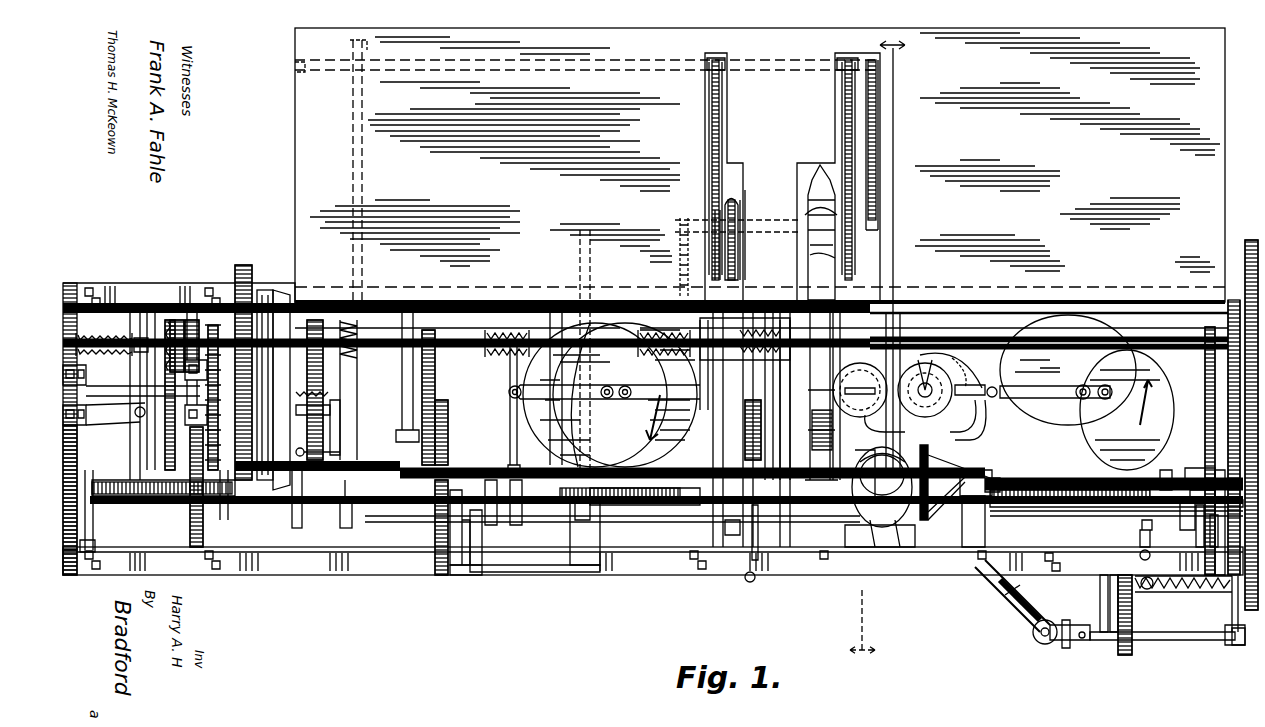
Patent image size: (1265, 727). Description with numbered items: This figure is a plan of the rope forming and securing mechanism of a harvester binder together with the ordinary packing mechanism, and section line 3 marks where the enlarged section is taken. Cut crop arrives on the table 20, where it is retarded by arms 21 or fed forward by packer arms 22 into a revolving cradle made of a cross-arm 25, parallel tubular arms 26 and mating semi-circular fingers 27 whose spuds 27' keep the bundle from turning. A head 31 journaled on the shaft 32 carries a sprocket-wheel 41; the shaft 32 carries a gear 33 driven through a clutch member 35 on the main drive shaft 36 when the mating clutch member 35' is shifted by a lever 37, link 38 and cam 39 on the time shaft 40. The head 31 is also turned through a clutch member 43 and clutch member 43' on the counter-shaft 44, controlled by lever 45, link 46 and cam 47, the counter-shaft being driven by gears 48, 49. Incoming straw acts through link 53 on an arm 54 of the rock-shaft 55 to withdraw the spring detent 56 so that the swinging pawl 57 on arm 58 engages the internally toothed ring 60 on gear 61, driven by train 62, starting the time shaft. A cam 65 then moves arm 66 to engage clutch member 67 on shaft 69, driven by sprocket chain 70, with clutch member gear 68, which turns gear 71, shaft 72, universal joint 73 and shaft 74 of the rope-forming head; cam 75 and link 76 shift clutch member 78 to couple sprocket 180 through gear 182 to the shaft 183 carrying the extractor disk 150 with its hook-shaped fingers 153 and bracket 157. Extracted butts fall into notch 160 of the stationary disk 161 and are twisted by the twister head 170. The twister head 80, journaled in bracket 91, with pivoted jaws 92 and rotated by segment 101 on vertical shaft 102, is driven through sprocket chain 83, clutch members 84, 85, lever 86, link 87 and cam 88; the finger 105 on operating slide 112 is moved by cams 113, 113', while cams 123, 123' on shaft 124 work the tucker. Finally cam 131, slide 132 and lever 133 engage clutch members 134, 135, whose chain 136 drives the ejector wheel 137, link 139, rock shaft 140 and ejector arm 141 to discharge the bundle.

The section line 3— 3 is at (877, 349).
The table 20 is at (760, 165).
The arms 21 is at (820, 122).
The packer arms 22 is at (745, 205).
The cross-arm 25 is at (270, 288).
The tubular arms 26 is at (385, 475).
The semi-circular fingers 27 is at (865, 322).
The spuds 27' is at (801, 244).
The head 31 is at (243, 265).
The shaft 32 is at (150, 430).
The gear 33 is at (168, 440).
The clutch member 35 is at (198, 311).
The clutch member 35' is at (173, 311).
The main drive shaft 36 is at (1175, 335).
The lever 37 is at (117, 400).
The link 38 is at (88, 456).
The cam 39 is at (93, 520).
The time shaft 40 is at (1072, 508).
The sprocket-wheel 41 is at (178, 508).
The clutch member 43 is at (206, 428).
The clutch member 43' is at (221, 430).
The counter-shaft 44 is at (325, 400).
The lever 45 is at (304, 450).
The link 46 is at (348, 528).
The cam 47 is at (296, 528).
The gear 48 is at (340, 425).
The gear 49 is at (300, 370).
The link 53 is at (755, 570).
The arm 54 is at (755, 580).
The rock-shaft 55 is at (555, 572).
The spring detent 56 is at (730, 418).
The swinging pawl 57 is at (476, 565).
The arm 58 is at (492, 525).
The internally toothed ring 60 is at (435, 510).
The gear 61 is at (430, 600).
The train 62 is at (435, 360).
The cam 65 is at (1165, 470).
The arm 66 is at (1140, 533).
The clutch member 67 is at (1147, 590).
The clutch member gear 68 is at (1100, 590).
The shaft 69 is at (1185, 590).
The sprocket chain 70 is at (1215, 395).
The gear 71 is at (1125, 655).
The shaft 72 is at (1180, 640).
The universal joint 73 is at (1045, 644).
The shaft 74 is at (990, 585).
The cam 75 is at (1200, 530).
The link 76 is at (1218, 531).
The clutch member 78 is at (1200, 460).
The twister head 80 is at (880, 408).
The sprocket chain 83 is at (775, 442).
The clutch member 84 is at (770, 315).
The clutch member 85 is at (750, 320).
The lever 86 is at (683, 285).
The link 87 is at (748, 530).
The cam 88 is at (733, 535).
The bracket 91 is at (900, 325).
The pivoted jaws 92 is at (893, 320).
The segment 101 is at (975, 343).
The vertical shaft 102 is at (925, 365).
The finger 105 is at (785, 410).
The operating slide 112 is at (625, 395).
The cam 113 is at (595, 395).
The cam 113' is at (551, 395).
The cam 123 is at (1112, 410).
The cam 123' is at (1071, 347).
The shaft 124 is at (1148, 394).
The cam 131 is at (520, 525).
The slide 132 is at (510, 430).
The lever 133 is at (515, 370).
The clutch member 134 is at (582, 272).
The clutch member 135 is at (593, 290).
The chain 136 is at (640, 505).
The ejector wheel 137 is at (590, 510).
The link 139 is at (585, 565).
The rock shaft 140 is at (785, 515).
The ejector arm 141 is at (718, 520).
The disk 150 is at (985, 468).
The hook-shaped finger 153 is at (985, 442).
The bracket 157 is at (992, 478).
The notch 160 is at (945, 460).
The stationary disk 161 is at (848, 547).
The twister head 170 is at (876, 455).
The sprocket 180 is at (1185, 525).
The gear 182 is at (1240, 465).
The shaft 183 is at (1050, 478).